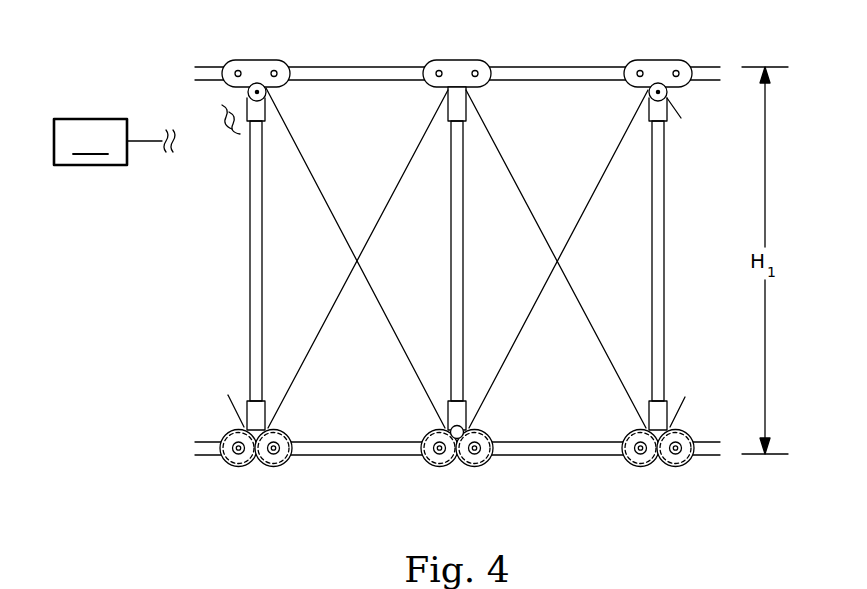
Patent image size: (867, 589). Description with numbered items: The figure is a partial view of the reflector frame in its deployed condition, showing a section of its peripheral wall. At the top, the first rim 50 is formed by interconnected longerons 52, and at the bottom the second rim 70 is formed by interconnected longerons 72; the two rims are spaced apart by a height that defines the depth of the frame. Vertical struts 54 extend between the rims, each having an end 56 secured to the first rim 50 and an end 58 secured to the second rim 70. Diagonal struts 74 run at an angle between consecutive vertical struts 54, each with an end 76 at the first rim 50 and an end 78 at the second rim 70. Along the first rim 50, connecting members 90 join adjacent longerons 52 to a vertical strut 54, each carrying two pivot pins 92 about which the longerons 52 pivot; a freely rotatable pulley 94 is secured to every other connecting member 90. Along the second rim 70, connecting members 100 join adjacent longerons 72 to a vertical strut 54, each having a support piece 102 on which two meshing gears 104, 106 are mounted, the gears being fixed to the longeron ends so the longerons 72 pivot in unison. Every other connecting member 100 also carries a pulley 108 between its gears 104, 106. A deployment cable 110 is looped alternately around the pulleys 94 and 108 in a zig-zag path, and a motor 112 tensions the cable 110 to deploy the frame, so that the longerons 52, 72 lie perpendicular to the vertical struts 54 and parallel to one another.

The first rim 50 is at (447, 265).
The longerons 52 is at (356, 66).
The vertical struts 54 is at (450, 256).
The end 56 is at (250, 128).
The end 58 is at (250, 384).
The second rim 70 is at (457, 479).
The longerons 72 is at (398, 458).
The diagonal struts 74 is at (407, 167).
The end 76 is at (471, 93).
The end 78 is at (632, 402).
The connecting members 90 is at (455, 54).
The pivot pins 92 is at (238, 60).
The pulley 94 is at (249, 92).
The connecting members 100 is at (434, 460).
The support piece 102 is at (451, 410).
The gear 104 is at (222, 434).
The gear 106 is at (284, 464).
The pulley 108 is at (469, 415).
The deployment cable 110 is at (142, 137).
The motor 112 is at (90, 142).